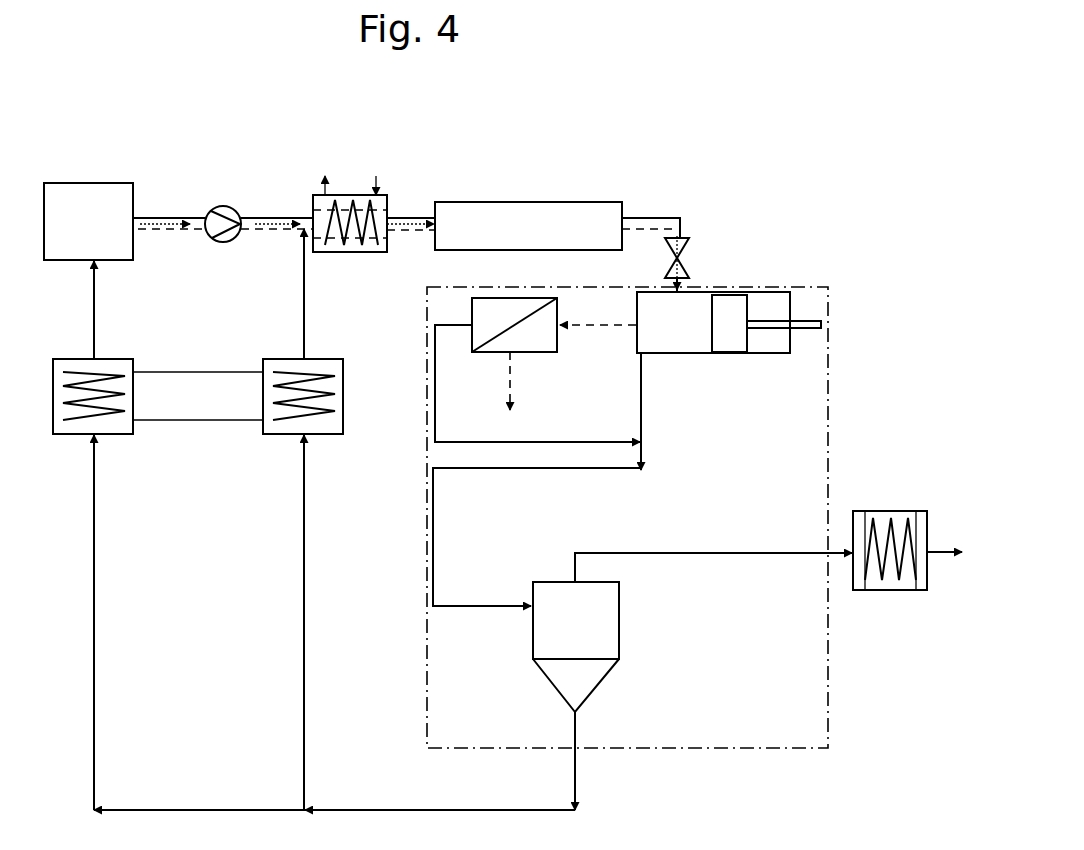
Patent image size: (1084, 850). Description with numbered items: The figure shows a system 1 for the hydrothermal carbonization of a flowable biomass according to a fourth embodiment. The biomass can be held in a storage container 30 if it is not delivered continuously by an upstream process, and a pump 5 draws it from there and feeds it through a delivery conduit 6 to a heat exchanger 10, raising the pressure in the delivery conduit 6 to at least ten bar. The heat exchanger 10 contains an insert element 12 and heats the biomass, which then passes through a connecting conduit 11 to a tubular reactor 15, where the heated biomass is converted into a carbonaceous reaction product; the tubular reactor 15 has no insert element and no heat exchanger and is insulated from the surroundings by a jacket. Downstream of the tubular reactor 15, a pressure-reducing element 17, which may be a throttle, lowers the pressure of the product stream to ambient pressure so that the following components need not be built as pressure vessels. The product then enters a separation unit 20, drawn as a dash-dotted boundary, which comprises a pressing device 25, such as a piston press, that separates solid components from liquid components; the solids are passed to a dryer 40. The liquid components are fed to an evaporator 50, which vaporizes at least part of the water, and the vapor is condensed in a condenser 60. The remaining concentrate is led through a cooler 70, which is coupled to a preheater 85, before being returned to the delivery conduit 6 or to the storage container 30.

The system 1 is at (270, 118).
The pump 5 is at (222, 210).
The delivery conduit 6 is at (272, 234).
The heat exchanger 10 is at (343, 200).
The connecting conduit 11 is at (416, 236).
The insert element 12 is at (362, 206).
The tubular reactor 15 is at (548, 201).
The pressure-reducing element 17 is at (684, 240).
The separation unit 20 is at (719, 746).
The pressing device 25 is at (700, 356).
The storage container 30 is at (93, 196).
The dryer 40 is at (532, 354).
The evaporator 50 is at (605, 637).
The condenser 60 is at (880, 511).
The cooler 70 is at (118, 436).
The preheater 85 is at (262, 436).